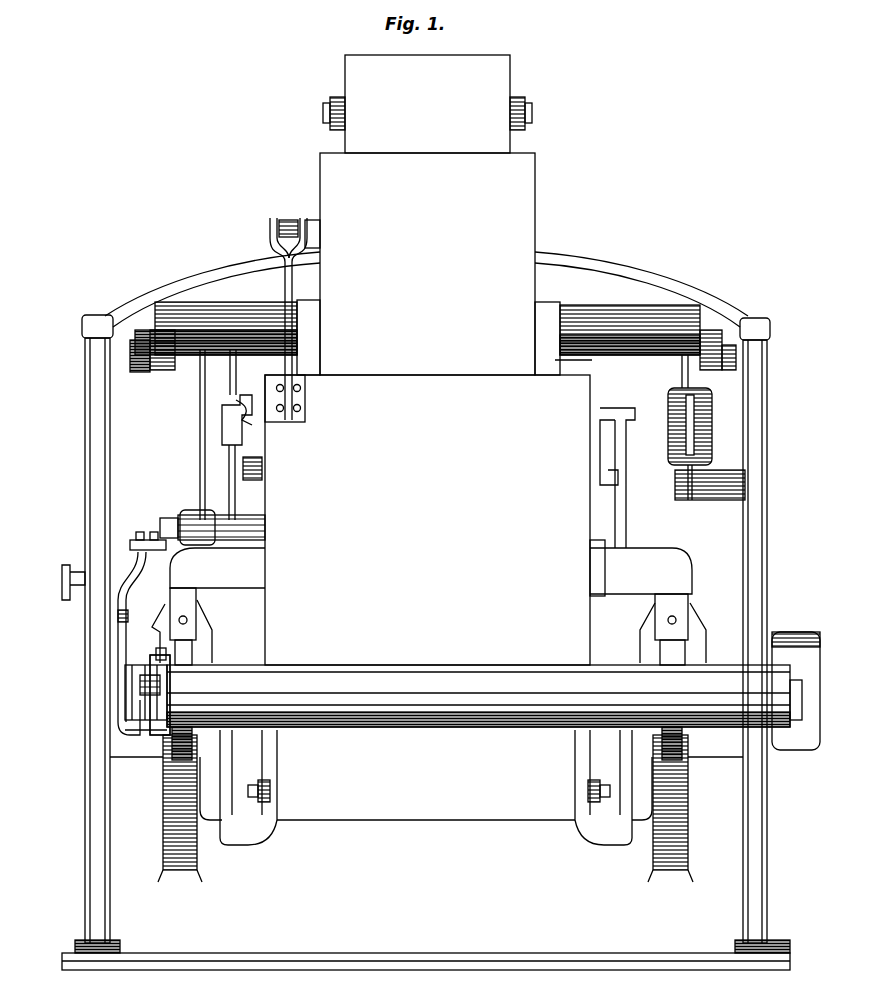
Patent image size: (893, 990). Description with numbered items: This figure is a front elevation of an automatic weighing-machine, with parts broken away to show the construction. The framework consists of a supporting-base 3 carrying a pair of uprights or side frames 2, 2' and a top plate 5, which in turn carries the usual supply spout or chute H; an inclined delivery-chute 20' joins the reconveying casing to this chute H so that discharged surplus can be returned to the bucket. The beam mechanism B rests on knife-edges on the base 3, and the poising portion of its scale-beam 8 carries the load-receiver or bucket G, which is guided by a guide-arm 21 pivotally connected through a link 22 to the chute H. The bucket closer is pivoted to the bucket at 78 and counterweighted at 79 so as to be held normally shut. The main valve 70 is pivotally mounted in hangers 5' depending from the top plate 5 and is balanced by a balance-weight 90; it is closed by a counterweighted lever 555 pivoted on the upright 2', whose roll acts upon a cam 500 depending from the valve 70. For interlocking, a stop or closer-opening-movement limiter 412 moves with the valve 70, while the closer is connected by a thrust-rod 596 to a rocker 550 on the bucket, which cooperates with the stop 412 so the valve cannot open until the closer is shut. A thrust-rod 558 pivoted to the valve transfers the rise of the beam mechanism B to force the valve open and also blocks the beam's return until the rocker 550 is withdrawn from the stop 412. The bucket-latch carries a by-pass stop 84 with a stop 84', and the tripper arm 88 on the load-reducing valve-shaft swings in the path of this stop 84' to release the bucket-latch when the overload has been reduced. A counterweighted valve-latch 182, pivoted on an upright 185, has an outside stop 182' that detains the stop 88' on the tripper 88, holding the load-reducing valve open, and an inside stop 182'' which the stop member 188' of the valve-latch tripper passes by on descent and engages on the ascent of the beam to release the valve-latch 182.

The upright or side frame 2 is at (104, 629).
The upright or side frame 2' is at (766, 630).
The supporting-base 3 is at (426, 863).
The top plate 5 is at (426, 281).
The hangers 5' is at (432, 360).
The scale-beam 8 is at (183, 652).
The inclined chute or delivery-chute 20' is at (427, 104).
The guide-arm 21 is at (284, 283).
The link 22 is at (288, 220).
The main valve 70 is at (557, 362).
The antifriction-roll 78 is at (262, 788).
The closer counterweight 79 is at (233, 758).
The by-pass stop 84 is at (194, 517).
The stop on by-pass 84' is at (112, 521).
The tripper arm 88 is at (99, 637).
The stop on bucket-latch tripper 88' is at (137, 604).
The balance-weight 90 is at (618, 322).
The valve-latch 182 is at (107, 697).
The outside stop of valve-latch 182' is at (92, 729).
The inside stop of valve-latch 182'' is at (100, 685).
The upright 185 is at (160, 703).
The stop member of valve-latch tripper 188' is at (105, 652).
The stop or closer-opening-movement limiter 412 is at (230, 380).
The cam 500 is at (683, 375).
The rocker 550 is at (242, 442).
The counterweighted lever 555 is at (683, 415).
The thrust-rod 558 is at (200, 440).
The thrust-rod 596 is at (232, 465).
The beam mechanism B is at (485, 691).
The load-receiver or bucket G is at (427, 520).
The supply spout or chute H is at (428, 264).